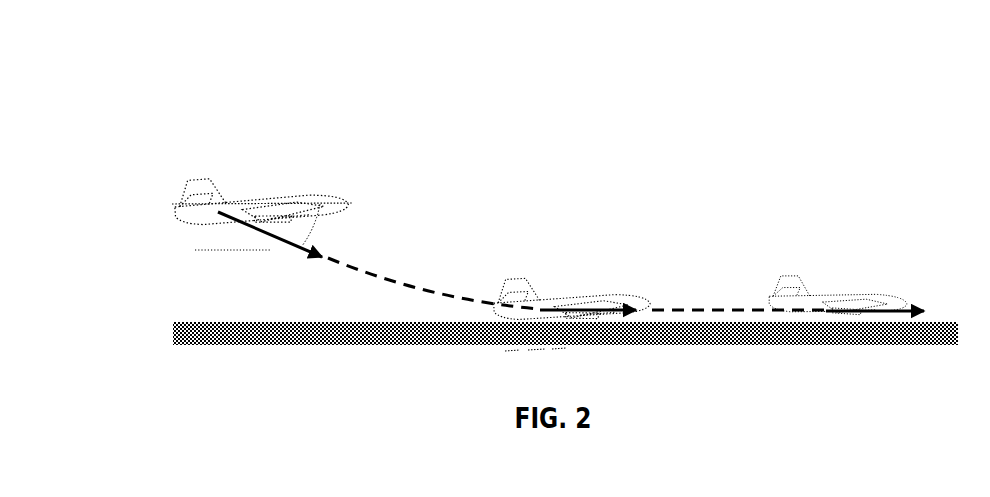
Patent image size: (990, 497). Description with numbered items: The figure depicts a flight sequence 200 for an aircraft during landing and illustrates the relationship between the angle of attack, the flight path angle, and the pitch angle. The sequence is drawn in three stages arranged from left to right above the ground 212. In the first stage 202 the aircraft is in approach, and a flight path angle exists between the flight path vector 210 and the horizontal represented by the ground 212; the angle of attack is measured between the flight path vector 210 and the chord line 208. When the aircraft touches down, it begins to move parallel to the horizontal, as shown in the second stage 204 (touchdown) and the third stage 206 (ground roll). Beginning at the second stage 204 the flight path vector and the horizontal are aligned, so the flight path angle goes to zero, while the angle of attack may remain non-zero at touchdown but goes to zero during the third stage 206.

The flight sequence 200 is at (176, 122).
The first stage 202 is at (261, 162).
The second stage 204 is at (571, 257).
The third stage 206 is at (846, 242).
The chord line 208 is at (326, 203).
The flight path vector 210 is at (283, 240).
The ground 212 is at (173, 331).